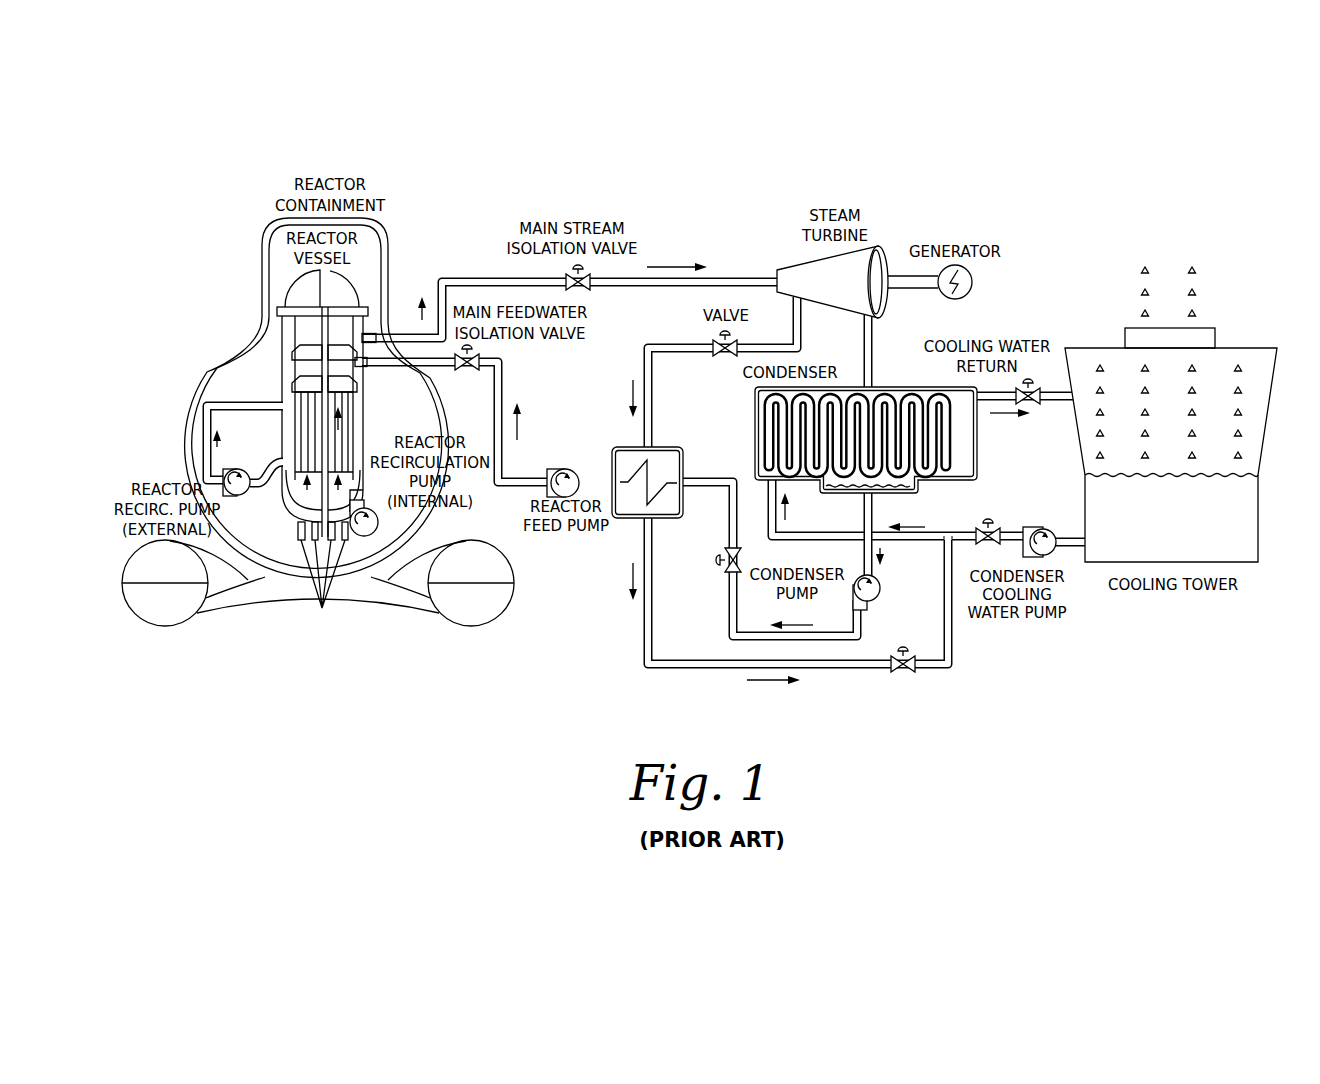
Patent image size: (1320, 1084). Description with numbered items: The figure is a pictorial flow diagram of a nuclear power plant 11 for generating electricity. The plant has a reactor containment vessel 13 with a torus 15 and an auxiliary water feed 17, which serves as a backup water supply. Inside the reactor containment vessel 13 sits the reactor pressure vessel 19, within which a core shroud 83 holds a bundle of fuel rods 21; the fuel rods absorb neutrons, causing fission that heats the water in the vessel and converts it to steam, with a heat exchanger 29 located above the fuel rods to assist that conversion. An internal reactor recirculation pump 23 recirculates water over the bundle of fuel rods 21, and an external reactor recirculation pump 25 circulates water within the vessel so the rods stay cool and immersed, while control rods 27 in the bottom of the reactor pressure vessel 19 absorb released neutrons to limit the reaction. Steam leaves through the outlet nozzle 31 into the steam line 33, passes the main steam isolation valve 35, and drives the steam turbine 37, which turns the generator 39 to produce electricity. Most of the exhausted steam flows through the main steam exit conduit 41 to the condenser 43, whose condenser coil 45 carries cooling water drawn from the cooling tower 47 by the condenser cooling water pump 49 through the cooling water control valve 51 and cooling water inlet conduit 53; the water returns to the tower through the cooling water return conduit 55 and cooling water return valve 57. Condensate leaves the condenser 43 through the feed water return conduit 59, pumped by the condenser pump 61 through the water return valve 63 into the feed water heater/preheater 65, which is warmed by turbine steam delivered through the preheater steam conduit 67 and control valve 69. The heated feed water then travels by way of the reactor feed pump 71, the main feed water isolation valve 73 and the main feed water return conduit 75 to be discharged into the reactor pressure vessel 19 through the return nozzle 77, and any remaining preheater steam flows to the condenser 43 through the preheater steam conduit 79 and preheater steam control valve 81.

The nuclear power plant 11 is at (1088, 225).
The reactor containment vessel 13 is at (262, 263).
The torus 15 is at (155, 612).
The auxiliary water feed 17 is at (470, 618).
The reactor pressure vessel 19 is at (365, 400).
The bundle of fuel rods 21 is at (345, 457).
The internal reactor recirculation pump 23 is at (380, 525).
The external reactor recirculation pump 25 is at (240, 500).
The control rods 27 is at (322, 608).
The heat exchanger 29 is at (300, 350).
The outlet nozzle 31 is at (362, 330).
The steam line 33 is at (485, 277).
The main steam isolation valve 35 is at (582, 290).
The steam turbine 37 is at (830, 292).
The generator 39 is at (974, 281).
The main steam exit conduit 41 is at (875, 333).
The condenser 43 is at (868, 440).
The condenser coil 45 is at (950, 427).
The cooling tower 47 is at (1258, 525).
The condenser cooling water pump 49 is at (1045, 527).
The cooling water control valve 51 is at (996, 527).
The cooling water inlet conduit 53 is at (793, 530).
The cooling water return conduit 55 is at (1057, 392).
The cooling water return valve 57 is at (1033, 406).
The feed water return conduit 59 is at (874, 512).
The condenser pump 61 is at (881, 586).
The water return valve 63 is at (723, 567).
The feed water heater/preheater 65 is at (669, 520).
The preheater steam conduit 67 is at (688, 347).
The control valve 69 is at (730, 358).
The reactor feed pump 71 is at (560, 467).
The main feed water isolation valve 73 is at (469, 372).
The main feed water return conduit 75 is at (510, 393).
The return nozzle 77 is at (362, 368).
The preheater steam conduit 79 is at (708, 674).
The preheater steam control valve 81 is at (901, 674).
The core shroud 83 is at (351, 416).